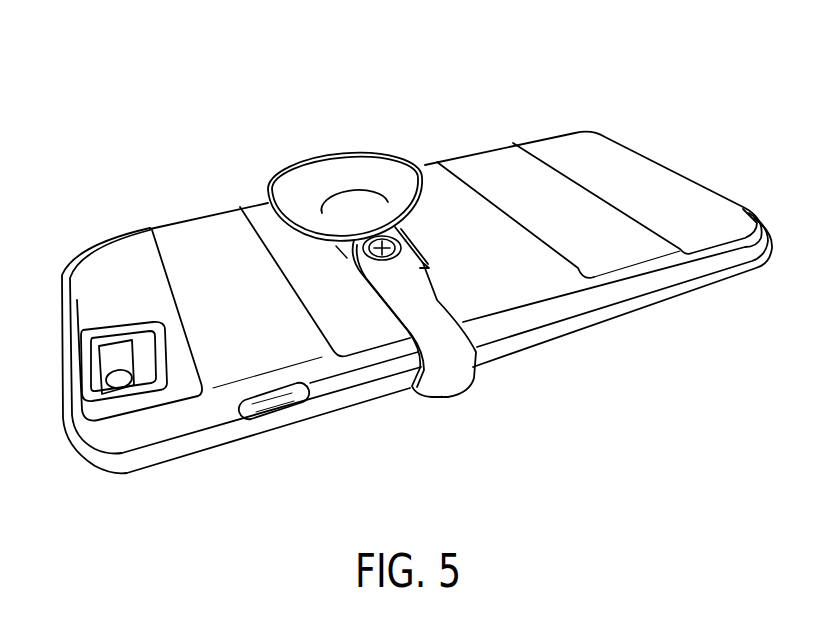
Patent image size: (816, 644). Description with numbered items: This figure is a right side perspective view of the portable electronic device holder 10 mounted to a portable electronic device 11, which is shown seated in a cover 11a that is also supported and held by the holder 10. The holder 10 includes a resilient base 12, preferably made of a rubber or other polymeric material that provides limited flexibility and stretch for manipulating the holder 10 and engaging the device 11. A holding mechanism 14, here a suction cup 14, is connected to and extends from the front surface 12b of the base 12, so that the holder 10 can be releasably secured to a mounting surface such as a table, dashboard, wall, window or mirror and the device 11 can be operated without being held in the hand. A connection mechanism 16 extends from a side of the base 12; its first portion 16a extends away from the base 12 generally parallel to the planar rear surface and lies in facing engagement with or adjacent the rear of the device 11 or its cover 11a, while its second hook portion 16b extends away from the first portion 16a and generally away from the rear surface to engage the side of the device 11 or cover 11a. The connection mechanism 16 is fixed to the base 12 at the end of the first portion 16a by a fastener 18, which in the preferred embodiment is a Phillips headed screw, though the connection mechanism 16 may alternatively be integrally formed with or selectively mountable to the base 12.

The portable electronic device holder 10 is at (260, 153).
The portable electronic device 11 is at (135, 343).
The rear device surface 11a is at (665, 270).
The resilient base 12 is at (345, 258).
The front surface 12b is at (398, 228).
The holding mechanism 14 is at (358, 166).
The connection mechanism 16 is at (381, 426).
The first portion 16a is at (414, 290).
The second hook portion 16b is at (443, 373).
The fastener 18 is at (375, 258).